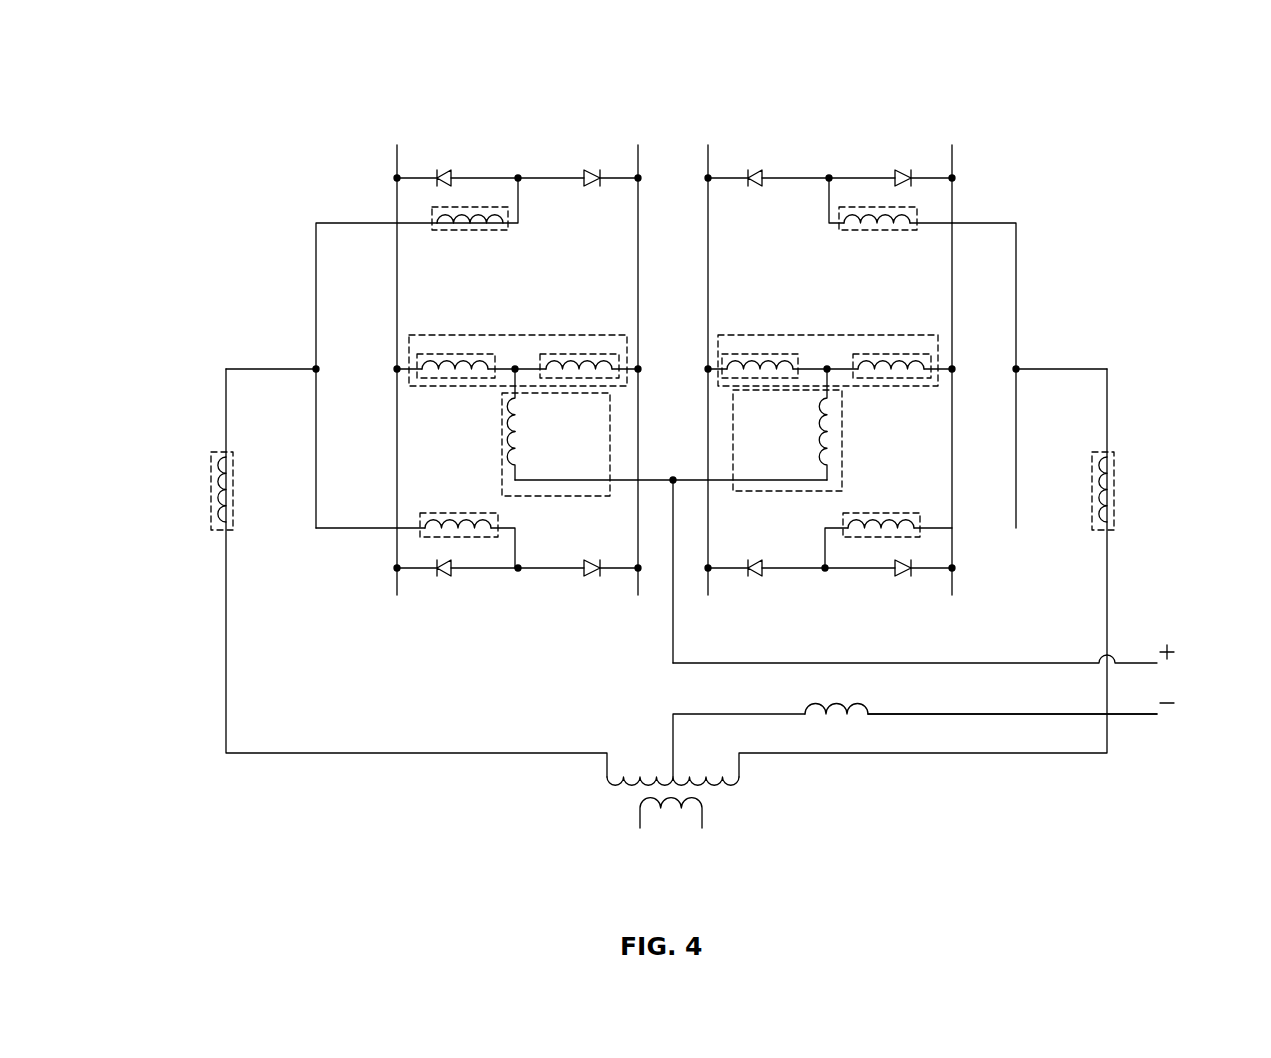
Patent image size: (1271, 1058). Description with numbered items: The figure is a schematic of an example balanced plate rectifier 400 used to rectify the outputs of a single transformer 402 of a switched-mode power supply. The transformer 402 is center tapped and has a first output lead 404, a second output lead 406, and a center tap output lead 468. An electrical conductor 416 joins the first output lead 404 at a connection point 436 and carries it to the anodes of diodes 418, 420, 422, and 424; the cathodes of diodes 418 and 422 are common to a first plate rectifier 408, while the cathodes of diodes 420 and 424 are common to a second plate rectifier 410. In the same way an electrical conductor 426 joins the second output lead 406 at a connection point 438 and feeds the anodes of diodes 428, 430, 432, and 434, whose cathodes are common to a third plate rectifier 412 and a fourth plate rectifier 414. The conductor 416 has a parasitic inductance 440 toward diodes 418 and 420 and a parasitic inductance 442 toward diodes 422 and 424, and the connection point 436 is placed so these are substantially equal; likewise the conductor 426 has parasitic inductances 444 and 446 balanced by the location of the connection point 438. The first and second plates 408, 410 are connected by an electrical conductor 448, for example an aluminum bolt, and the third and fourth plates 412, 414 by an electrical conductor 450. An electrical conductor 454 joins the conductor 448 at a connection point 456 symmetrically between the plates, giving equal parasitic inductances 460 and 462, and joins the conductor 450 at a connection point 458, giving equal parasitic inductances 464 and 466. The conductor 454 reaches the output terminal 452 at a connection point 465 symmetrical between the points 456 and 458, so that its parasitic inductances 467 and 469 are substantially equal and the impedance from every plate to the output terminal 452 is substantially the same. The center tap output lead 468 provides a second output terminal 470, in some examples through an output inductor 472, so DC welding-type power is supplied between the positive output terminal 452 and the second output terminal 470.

The balanced plate rectifier 400 is at (273, 67).
The transformer 402 is at (730, 793).
The first output lead 404 is at (226, 452).
The second output lead 406 is at (1107, 452).
The first plate rectifier 408 is at (395, 162).
The second plate rectifier 410 is at (637, 160).
The third plate rectifier 412 is at (708, 160).
The fourth plate rectifier 414 is at (952, 160).
The electrical conductor 416 is at (316, 223).
The diode 418 is at (447, 170).
The diode 420 is at (592, 170).
The diode 422 is at (443, 572).
The diode 424 is at (592, 572).
The electrical conductor 426 is at (1016, 223).
The diode 428 is at (762, 172).
The diode 430 is at (900, 172).
The diode 432 is at (755, 572).
The diode 434 is at (902, 572).
The connection point 436 is at (315, 368).
The connection point 438 is at (1016, 370).
The parasitic inductance 440 is at (472, 230).
The parasitic inductance 442 is at (452, 527).
The parasitic inductance 444 is at (865, 232).
The parasitic inductance 446 is at (873, 513).
The electrical conductor 448 is at (627, 338).
The electrical conductor 450 is at (772, 340).
The output terminal 452 is at (1140, 666).
The electrical conductor 454 is at (540, 496).
The connection point 456 is at (515, 372).
The connection point 458 is at (827, 372).
The parasitic inductance 460 is at (462, 368).
The parasitic inductance 462 is at (575, 370).
The parasitic inductance 464 is at (782, 363).
The connection point 465 is at (673, 482).
The parasitic inductance 466 is at (903, 368).
The parasitic inductance 467 is at (513, 433).
The center tap output lead 468 is at (673, 714).
The parasitic inductance 469 is at (825, 433).
The second output terminal 470 is at (1140, 716).
The output inductor 472 is at (828, 702).